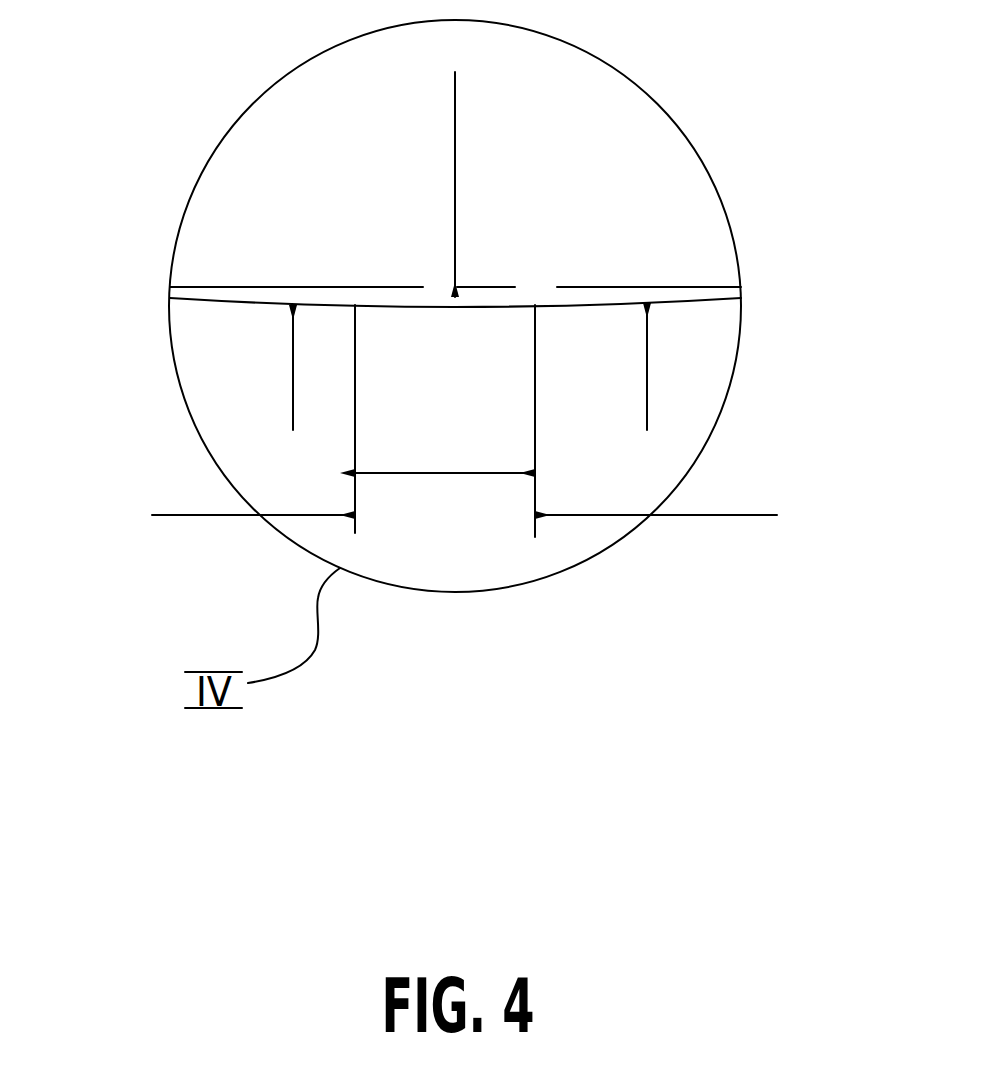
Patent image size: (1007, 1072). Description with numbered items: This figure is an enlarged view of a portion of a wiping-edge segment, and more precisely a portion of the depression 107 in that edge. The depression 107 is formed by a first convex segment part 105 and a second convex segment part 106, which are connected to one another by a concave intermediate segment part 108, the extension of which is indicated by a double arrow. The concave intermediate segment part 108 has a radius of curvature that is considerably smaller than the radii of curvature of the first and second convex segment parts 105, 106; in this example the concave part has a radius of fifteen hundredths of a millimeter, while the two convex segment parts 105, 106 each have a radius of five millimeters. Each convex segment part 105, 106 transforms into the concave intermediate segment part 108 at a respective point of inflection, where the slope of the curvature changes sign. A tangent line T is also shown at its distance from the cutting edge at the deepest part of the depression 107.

The first convex segment part 105 is at (728, 513).
The second convex segment part 106 is at (200, 513).
The depression 107 is at (510, 225).
The concave intermediate segment part 108 is at (407, 472).
The tangent line T is at (386, 287).